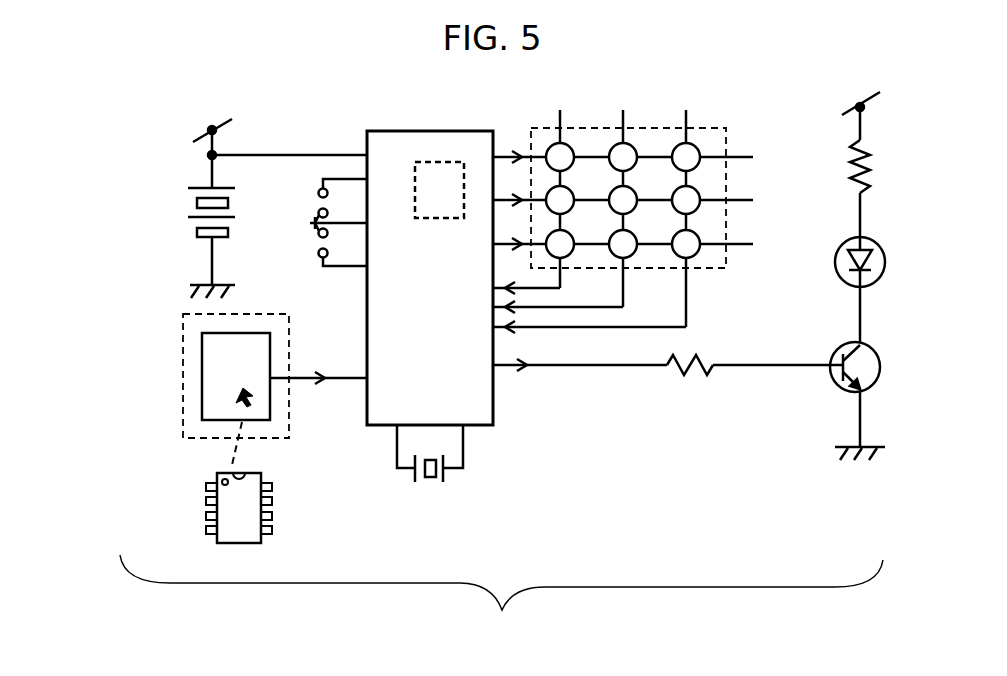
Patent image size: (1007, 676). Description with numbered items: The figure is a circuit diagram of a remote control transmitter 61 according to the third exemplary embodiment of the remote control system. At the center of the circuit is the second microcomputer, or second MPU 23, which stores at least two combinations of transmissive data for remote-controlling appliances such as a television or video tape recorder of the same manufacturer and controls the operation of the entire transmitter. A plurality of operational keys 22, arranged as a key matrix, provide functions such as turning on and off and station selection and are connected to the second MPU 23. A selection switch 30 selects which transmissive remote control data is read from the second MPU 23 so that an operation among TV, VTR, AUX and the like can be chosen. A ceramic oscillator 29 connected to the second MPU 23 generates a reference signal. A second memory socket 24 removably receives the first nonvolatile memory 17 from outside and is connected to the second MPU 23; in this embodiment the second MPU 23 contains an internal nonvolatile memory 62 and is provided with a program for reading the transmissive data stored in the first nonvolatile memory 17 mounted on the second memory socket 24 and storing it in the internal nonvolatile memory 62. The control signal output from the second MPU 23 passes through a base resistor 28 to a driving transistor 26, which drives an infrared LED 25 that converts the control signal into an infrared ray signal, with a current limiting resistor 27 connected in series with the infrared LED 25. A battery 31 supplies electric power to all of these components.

The first nonvolatile memory 17 is at (245, 533).
The operational keys 22 is at (648, 125).
The second microcomputer (second MPU) 23 is at (410, 320).
The second memory socket 24 is at (182, 385).
The infrared LED 25 is at (838, 268).
The driving transistor 26 is at (837, 380).
The current limiting resistor 27 is at (847, 178).
The base resistor 28 is at (688, 377).
The ceramic oscillator 29 is at (430, 483).
The selection switch 30 is at (310, 197).
The battery 31 is at (190, 203).
The remote control transmitter 61 is at (501, 605).
The internal nonvolatile memory 62 is at (434, 177).